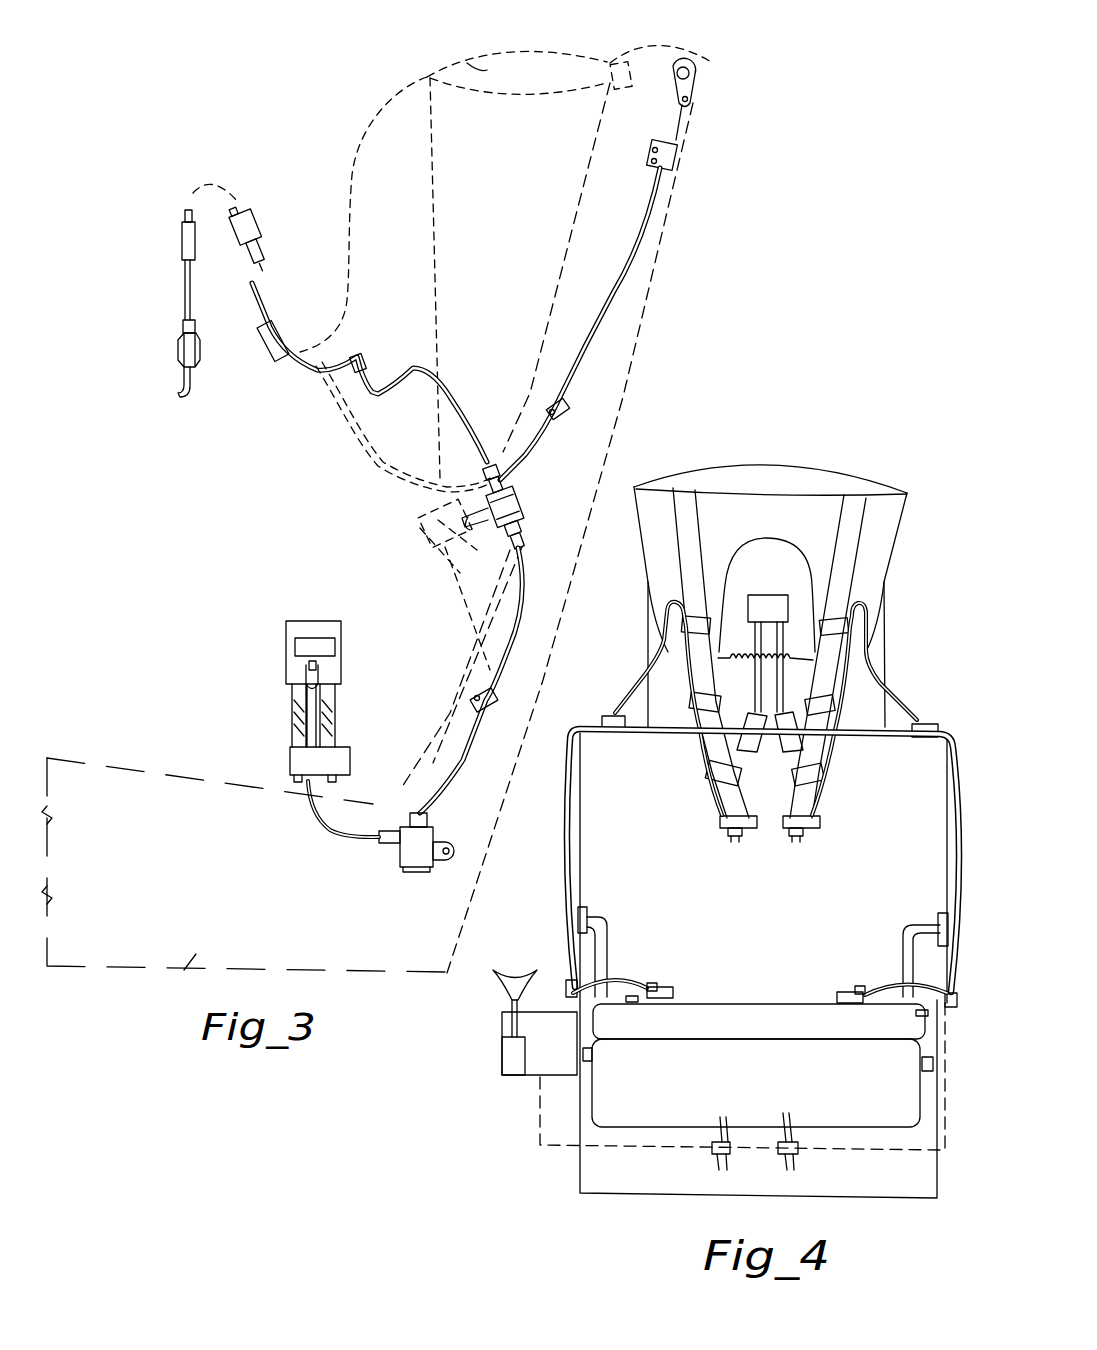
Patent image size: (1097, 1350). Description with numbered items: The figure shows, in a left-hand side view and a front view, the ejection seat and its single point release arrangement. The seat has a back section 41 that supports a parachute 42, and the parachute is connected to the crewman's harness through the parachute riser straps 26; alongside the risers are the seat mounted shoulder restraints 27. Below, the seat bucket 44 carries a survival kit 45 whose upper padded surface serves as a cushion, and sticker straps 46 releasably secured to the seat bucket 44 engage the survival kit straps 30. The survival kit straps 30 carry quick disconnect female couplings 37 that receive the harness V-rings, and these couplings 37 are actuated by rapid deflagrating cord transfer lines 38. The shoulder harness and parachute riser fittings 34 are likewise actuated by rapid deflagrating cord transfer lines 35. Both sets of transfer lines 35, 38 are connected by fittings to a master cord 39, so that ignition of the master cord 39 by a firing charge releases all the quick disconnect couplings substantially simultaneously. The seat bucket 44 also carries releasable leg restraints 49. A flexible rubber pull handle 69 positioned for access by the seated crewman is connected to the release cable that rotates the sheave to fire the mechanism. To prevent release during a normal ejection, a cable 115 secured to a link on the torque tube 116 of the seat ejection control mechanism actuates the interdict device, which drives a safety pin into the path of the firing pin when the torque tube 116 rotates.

In FIG. 3, the parachute riser straps 26 is at (350, 212).
In FIG. 4, the parachute riser straps 26 is at (692, 538).
In FIG. 3, the seat mounted shoulder restraints 27 is at (368, 452).
In FIG. 4, the seat mounted shoulder restraints 27 is at (792, 752).
In FIG. 3, the survival kit straps 30 is at (337, 713).
In FIG. 4, the survival kit straps 30 is at (637, 995).
In FIG. 4, the shoulder harness and parachute riser fittings 34 is at (724, 832).
In FIG. 4, the rapid deflagrating cord transfer lines 35 is at (650, 678).
In FIG. 3, the quick disconnect female couplings 37 is at (341, 631).
In FIG. 4, the quick disconnect female couplings 37 is at (673, 990).
In FIG. 3, the rapid deflagrating cord transfer lines 38 is at (334, 827).
In FIG. 4, the rapid deflagrating cord transfer lines 38 is at (640, 984).
In FIG. 4, the master cord 39 is at (693, 740).
In FIG. 3, the back section 41 is at (622, 390).
In FIG. 3, the parachute 42 is at (458, 48).
In FIG. 3, the seat bucket 44 is at (170, 984).
In FIG. 4, the survival kit 45 is at (767, 990).
In FIG. 4, the sticker straps 46 is at (606, 950).
In FIG. 4, the leg restraints 49 is at (773, 1113).
In FIG. 4, the pull handle 69 is at (507, 970).
In FIG. 3, the cable 115 is at (680, 128).
In FIG. 3, the torque tube 116 is at (692, 78).